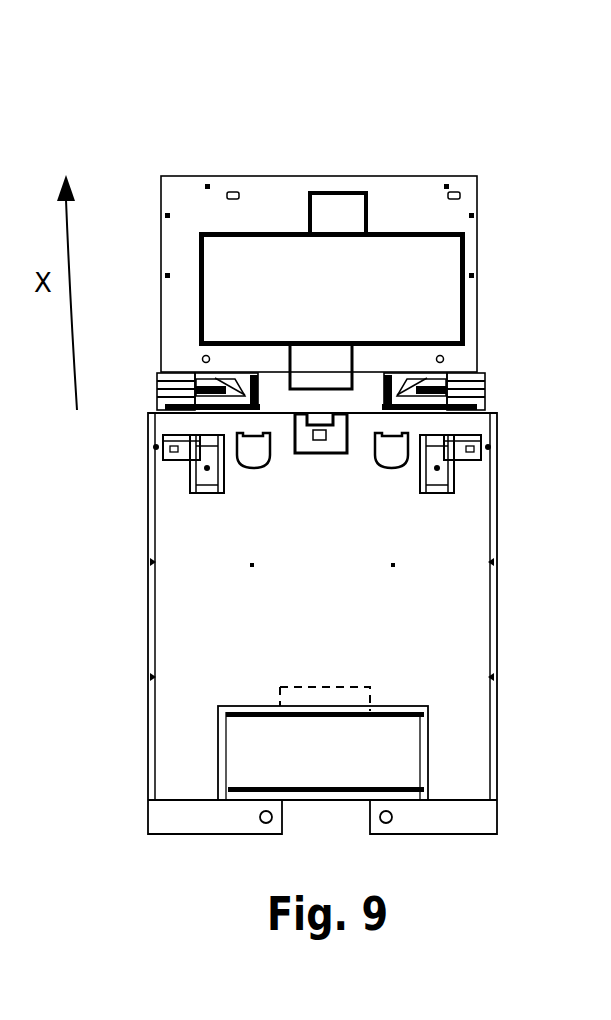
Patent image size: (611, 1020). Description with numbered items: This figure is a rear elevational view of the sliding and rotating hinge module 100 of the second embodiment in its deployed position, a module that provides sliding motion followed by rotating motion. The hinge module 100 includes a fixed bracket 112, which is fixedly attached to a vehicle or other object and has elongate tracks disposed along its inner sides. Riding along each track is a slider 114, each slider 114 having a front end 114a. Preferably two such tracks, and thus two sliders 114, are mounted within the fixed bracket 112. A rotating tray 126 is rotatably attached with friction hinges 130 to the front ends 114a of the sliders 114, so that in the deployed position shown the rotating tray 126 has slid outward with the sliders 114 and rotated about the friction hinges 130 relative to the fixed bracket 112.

The sliding and rotating hinge module 100 is at (487, 133).
The fixed bracket 112 is at (182, 657).
The slider 114 is at (160, 398).
The front end 114a is at (215, 373).
The rotating tray 126 is at (452, 211).
The friction hinge 130 is at (205, 357).